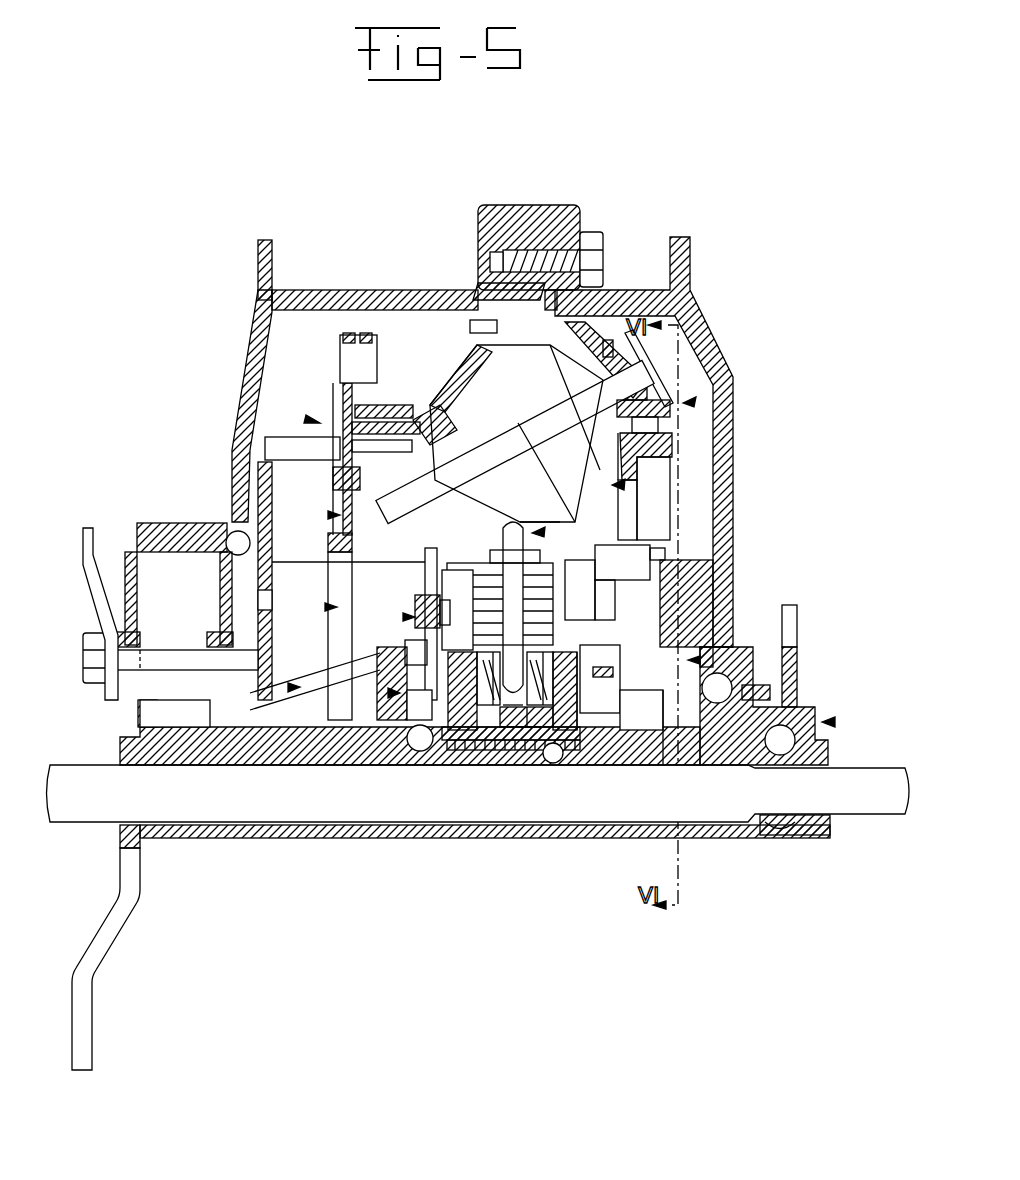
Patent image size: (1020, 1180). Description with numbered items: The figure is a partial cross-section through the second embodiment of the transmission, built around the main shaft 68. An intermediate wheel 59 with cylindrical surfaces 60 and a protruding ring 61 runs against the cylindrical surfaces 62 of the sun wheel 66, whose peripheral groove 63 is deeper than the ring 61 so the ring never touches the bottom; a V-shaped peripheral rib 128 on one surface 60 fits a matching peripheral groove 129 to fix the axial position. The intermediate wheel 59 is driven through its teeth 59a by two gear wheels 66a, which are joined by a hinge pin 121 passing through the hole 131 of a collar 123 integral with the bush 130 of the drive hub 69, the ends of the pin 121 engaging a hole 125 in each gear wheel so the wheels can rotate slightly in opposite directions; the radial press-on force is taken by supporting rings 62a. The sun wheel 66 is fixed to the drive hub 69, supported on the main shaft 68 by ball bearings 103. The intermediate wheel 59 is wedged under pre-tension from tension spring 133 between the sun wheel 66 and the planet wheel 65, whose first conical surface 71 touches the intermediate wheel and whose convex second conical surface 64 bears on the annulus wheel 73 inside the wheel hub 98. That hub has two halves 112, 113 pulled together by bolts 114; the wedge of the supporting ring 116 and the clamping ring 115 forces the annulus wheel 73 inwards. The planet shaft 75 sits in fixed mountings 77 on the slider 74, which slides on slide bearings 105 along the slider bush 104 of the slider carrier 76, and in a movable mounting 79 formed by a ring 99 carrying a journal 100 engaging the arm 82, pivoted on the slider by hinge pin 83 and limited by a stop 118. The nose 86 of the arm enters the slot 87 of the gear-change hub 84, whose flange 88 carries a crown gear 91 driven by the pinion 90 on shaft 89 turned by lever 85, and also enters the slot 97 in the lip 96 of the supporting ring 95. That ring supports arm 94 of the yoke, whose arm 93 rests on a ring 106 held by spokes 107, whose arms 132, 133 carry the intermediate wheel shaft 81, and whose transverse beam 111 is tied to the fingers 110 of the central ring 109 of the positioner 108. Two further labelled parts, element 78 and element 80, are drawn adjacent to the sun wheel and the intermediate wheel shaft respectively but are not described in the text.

The intermediate wheel 59 is at (535, 532).
The teeth 59a is at (500, 575).
The cylindrical surfaces 60 is at (470, 570).
The protruding ring 61 is at (515, 520).
The cylindrical surfaces 62 is at (448, 718).
The supporting rings 62a is at (397, 723).
The peripheral groove 63 is at (478, 712).
The second conical surface 64 is at (553, 326).
The planet wheel 65 is at (625, 487).
The sun wheel 66 is at (577, 720).
The gear wheels 66a is at (550, 730).
The main shaft 68 is at (200, 800).
The drive hub 69 is at (825, 722).
The first conical surface 71 is at (443, 367).
The annulus wheel 73 is at (470, 324).
The slider 74 is at (690, 402).
The shaft 75 is at (637, 333).
The slider carrier 76 is at (312, 420).
The fixed mountings 77 is at (687, 357).
The spacer 78 is at (655, 595).
The movable mounting 79 is at (335, 515).
The retainer 80 is at (413, 617).
The shaft 81 is at (425, 553).
The arm 82 is at (340, 390).
The hinge pin 83 is at (347, 353).
The gear-change hub 84 is at (207, 707).
The lever 85 is at (83, 558).
The nose 86 is at (335, 607).
The slot 87 is at (318, 540).
The flange 88 is at (262, 625).
The shaft 89 is at (195, 633).
The pinion 90 is at (262, 655).
The crown gear 91 is at (225, 608).
The arm 93 is at (593, 740).
The arm 94 is at (423, 653).
The supporting ring 95 is at (398, 693).
The lip 96 is at (253, 730).
The slot 97 is at (297, 727).
The wheel hub 98 is at (700, 250).
The ring 99 is at (450, 497).
The journal 100 is at (343, 478).
The ball bearings 103 is at (418, 745).
The slider bush 104 is at (277, 445).
The slide bearings 105 is at (384, 420).
The ring 106 is at (640, 730).
The spokes 107 is at (630, 497).
The positioner 108 is at (692, 660).
The central ring 109 is at (682, 767).
The fingers 110 is at (725, 645).
The transverse beam 111 is at (590, 537).
The wheel hub half 112 is at (365, 265).
The wheel hub half 113 is at (610, 300).
The bolts 114 is at (592, 237).
The clamping ring 115 is at (517, 205).
The supporting ring 116 is at (466, 290).
The stop 118 is at (333, 420).
The hinge pin 121 is at (493, 702).
The collar 123 is at (527, 750).
The hole 125 is at (543, 720).
The peripheral rib 128 is at (652, 552).
The peripheral groove 129 is at (700, 666).
The bush 130 is at (560, 760).
The hole 131 is at (512, 745).
The arm 132 is at (718, 622).
The tension spring 133 is at (418, 595).